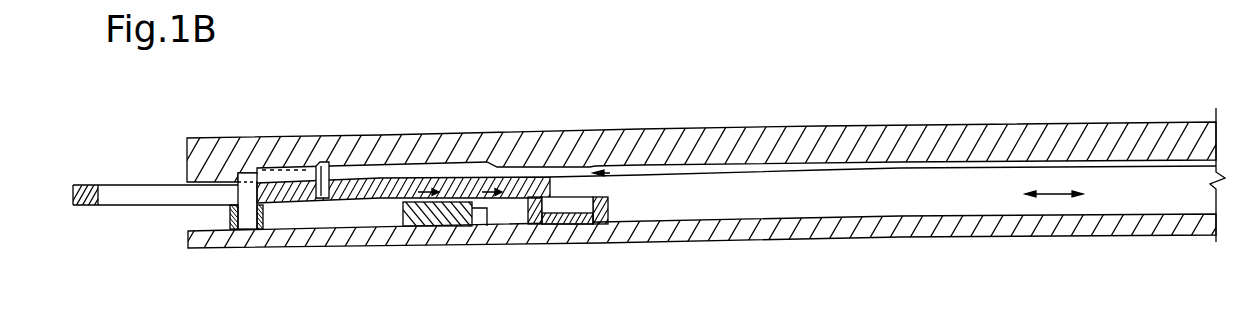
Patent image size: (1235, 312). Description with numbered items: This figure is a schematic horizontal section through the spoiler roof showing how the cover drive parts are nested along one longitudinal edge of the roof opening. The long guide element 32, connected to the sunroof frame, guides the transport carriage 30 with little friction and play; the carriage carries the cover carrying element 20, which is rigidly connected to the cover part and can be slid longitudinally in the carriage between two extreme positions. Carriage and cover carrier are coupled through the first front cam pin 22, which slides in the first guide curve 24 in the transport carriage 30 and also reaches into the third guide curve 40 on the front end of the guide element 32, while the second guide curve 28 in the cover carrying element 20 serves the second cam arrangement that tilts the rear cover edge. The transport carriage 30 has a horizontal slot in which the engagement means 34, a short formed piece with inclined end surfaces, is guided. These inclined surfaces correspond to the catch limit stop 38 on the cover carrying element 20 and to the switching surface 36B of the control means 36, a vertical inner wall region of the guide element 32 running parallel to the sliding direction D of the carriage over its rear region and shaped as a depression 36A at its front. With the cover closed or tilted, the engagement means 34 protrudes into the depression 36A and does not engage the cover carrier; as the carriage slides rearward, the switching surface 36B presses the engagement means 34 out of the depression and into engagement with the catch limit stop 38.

The cover carrying element 20 is at (586, 214).
The first front cam pin 22 is at (248, 195).
The first guide curve 24 is at (142, 191).
The second guide curve 28 is at (577, 203).
The transport carriage 30 is at (550, 187).
The guide element 32 is at (968, 208).
The engagement means 34 is at (322, 165).
The control means 36 is at (593, 172).
The depression 36A is at (442, 165).
The switching surface 36B is at (492, 164).
The catch limit stop 38 is at (484, 215).
The third guide curve 40 is at (248, 171).
The direction of displacement D is at (1053, 194).